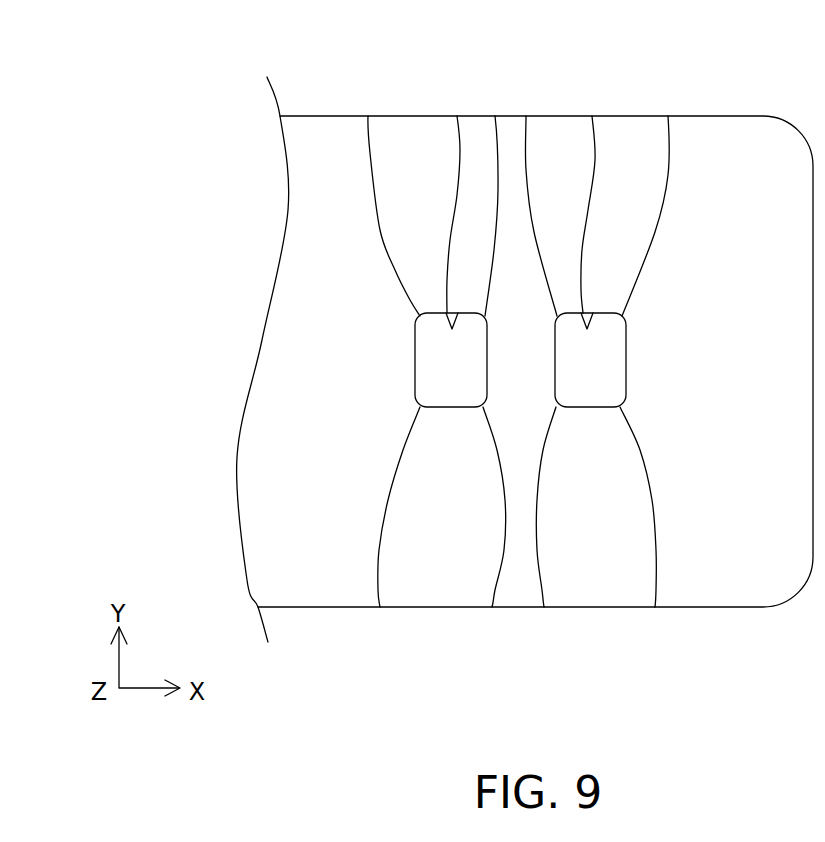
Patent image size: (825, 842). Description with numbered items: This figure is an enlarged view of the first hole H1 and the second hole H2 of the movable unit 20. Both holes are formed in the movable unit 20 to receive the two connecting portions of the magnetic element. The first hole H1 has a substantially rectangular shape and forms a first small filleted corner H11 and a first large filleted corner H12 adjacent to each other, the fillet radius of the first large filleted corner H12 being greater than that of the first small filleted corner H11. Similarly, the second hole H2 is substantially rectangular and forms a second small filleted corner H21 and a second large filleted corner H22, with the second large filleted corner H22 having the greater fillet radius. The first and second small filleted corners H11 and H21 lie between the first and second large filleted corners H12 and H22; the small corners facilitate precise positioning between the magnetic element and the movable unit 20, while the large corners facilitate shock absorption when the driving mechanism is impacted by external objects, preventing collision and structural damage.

The movable unit 20 is at (746, 116).
The first hole H1 is at (457, 116).
The second hole H2 is at (592, 116).
The first small filleted corner H11 is at (495, 116).
The first large filleted corner H12 is at (368, 116).
The second small filleted corner H21 is at (526, 116).
The second large filleted corner H22 is at (668, 116).